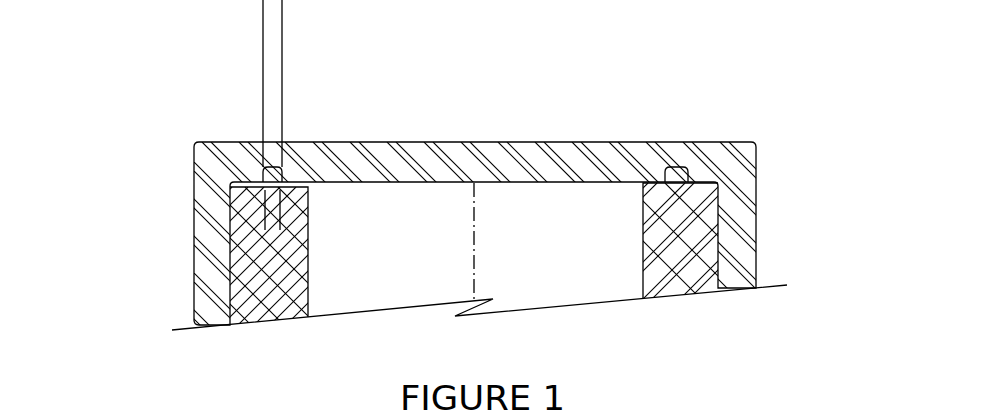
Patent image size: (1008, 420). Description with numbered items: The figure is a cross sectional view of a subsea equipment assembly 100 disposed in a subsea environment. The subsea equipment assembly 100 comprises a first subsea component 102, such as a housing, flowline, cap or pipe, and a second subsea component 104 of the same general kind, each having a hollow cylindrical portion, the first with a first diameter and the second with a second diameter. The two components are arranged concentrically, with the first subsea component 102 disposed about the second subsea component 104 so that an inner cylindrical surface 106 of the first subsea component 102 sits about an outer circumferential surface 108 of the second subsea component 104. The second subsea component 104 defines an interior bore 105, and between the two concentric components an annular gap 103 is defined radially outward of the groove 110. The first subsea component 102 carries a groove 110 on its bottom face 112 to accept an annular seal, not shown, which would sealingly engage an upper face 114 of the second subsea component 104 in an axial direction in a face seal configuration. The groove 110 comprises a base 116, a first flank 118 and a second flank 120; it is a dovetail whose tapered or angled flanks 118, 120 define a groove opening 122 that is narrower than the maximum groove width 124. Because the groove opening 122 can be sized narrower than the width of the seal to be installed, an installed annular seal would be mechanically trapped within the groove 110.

The subsea equipment assembly 100 is at (778, 102).
The first subsea component 102 is at (758, 212).
The annular gap 103 is at (239, 309).
The second subsea component 104 is at (691, 230).
The interior bore 105 is at (475, 241).
The inner cylindrical surface 106 is at (234, 246).
The outer circumferential surface 108 is at (228, 273).
The groove 110 is at (671, 164).
The bottom face 112 is at (341, 188).
The upper face 114 is at (236, 181).
The base 116 is at (272, 160).
The first flank 118 is at (259, 176).
The second flank 120 is at (285, 176).
The groove opening 122 is at (318, 213).
The maximum groove width 124 is at (318, 16).